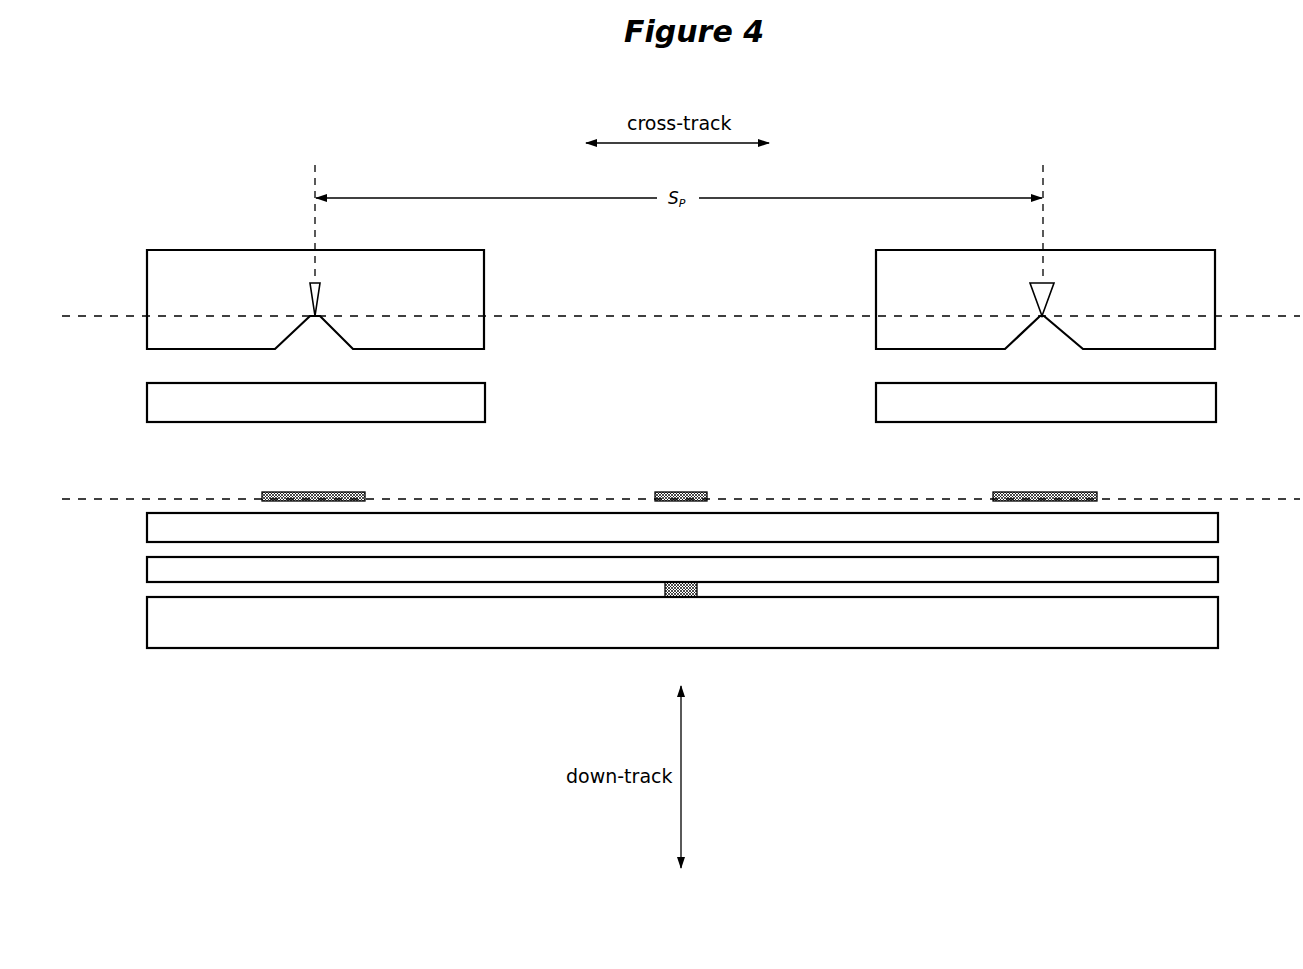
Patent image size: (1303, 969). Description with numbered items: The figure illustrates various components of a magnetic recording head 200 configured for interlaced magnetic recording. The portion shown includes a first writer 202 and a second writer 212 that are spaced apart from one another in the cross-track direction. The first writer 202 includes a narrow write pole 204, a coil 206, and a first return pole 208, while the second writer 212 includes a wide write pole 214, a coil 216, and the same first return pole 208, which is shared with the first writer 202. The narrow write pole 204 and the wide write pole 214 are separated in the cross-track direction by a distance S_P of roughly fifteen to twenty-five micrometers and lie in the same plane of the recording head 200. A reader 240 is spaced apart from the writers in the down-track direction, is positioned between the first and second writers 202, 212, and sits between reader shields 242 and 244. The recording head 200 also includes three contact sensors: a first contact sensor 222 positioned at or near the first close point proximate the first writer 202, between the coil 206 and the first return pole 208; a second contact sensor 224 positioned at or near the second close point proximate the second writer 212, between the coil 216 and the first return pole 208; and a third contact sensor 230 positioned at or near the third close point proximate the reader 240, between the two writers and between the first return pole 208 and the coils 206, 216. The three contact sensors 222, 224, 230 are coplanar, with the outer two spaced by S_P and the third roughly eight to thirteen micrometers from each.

The magnetic recording head 200 is at (908, 118).
The first writer 202 is at (192, 250).
The narrow write pole 204 is at (321, 290).
The coil 206 is at (487, 400).
The first return pole 208 is at (1220, 526).
The second writer 212 is at (1133, 250).
The wide write pole 214 is at (1055, 292).
The coil 216 is at (875, 401).
The first contact sensor 222 is at (308, 492).
The second contact sensor 224 is at (1041, 492).
The third contact sensor 230 is at (679, 492).
The reader 240 is at (682, 599).
The reader shield 242 is at (1220, 567).
The reader shield 244 is at (1220, 616).